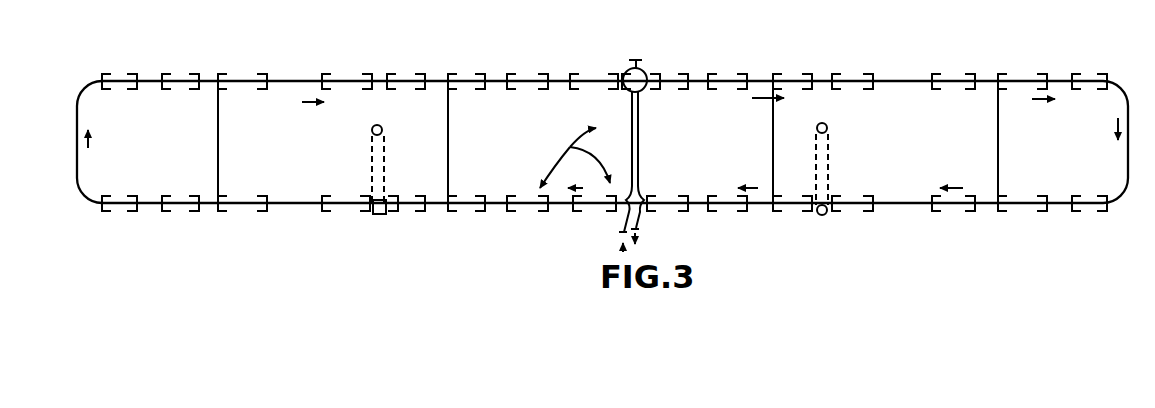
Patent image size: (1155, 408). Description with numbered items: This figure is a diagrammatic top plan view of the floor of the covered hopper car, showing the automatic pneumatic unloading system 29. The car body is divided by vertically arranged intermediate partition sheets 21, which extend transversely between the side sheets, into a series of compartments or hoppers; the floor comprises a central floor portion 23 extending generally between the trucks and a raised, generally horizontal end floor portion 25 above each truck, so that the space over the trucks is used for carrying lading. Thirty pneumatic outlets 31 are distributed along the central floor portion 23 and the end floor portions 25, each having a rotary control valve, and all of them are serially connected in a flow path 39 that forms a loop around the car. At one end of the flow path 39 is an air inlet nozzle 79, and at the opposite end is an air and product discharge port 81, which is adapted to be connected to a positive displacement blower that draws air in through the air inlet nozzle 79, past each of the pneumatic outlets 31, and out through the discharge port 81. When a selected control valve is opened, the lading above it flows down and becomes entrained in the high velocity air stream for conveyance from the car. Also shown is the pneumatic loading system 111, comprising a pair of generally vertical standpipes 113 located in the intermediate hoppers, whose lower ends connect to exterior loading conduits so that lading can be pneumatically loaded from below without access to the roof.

The flow path 39 is at (285, 76).
The intermediate partition sheets 21 is at (219, 160).
The end floor portion 25 is at (170, 157).
The central floor portion 23 is at (703, 162).
The standpipes 113 is at (408, 136).
The pneumatic loading system 111 is at (382, 226).
The pneumatic outlets 31 is at (571, 158).
The automatic pneumatic unloading system 29 is at (603, 222).
The air inlet nozzle 79 is at (613, 228).
The air and product discharge port 81 is at (647, 224).